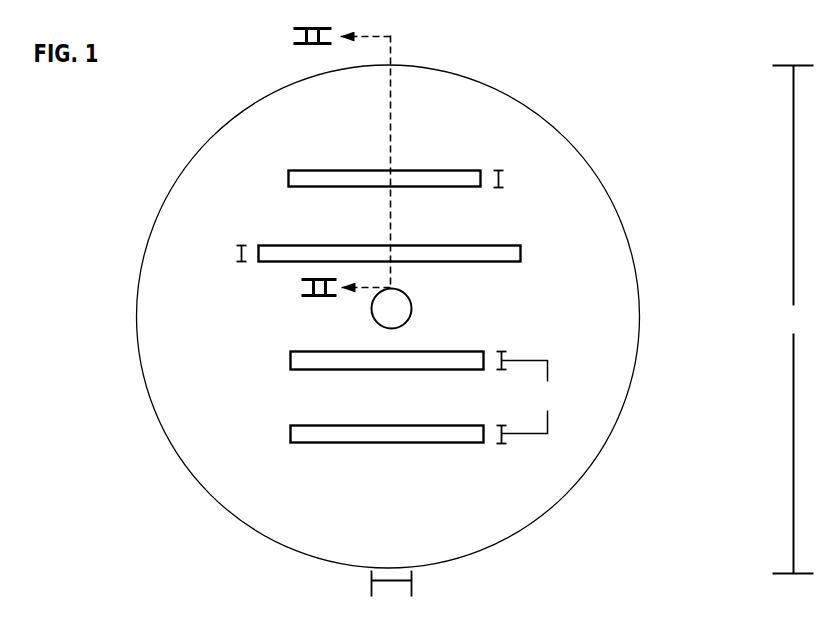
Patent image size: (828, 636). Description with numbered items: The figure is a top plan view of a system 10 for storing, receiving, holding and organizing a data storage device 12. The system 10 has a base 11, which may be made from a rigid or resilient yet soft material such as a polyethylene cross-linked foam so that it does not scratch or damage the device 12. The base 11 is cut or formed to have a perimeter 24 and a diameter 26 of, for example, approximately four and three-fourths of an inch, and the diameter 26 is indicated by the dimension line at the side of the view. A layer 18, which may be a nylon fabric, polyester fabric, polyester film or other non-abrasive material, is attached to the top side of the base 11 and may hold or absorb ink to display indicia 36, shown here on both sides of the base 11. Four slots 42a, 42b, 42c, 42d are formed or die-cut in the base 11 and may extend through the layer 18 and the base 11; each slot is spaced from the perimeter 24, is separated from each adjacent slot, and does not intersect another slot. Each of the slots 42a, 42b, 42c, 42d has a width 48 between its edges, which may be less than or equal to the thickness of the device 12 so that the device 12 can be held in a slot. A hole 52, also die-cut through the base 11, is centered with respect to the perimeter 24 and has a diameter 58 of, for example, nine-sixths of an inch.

The system 10 is at (610, 163).
The base 11 is at (563, 437).
The data storage device 12 is at (528, 243).
The layer 18 is at (425, 157).
The perimeter 24 is at (635, 248).
The diameter 26 is at (793, 320).
The indicia 36 is at (168, 252).
The slot 42a is at (290, 178).
The slot 42b is at (295, 265).
The slot 42c is at (295, 373).
The slot 42d is at (295, 447).
The width 48 is at (383, 307).
The hole 52 is at (413, 310).
The diameter 58 is at (392, 588).